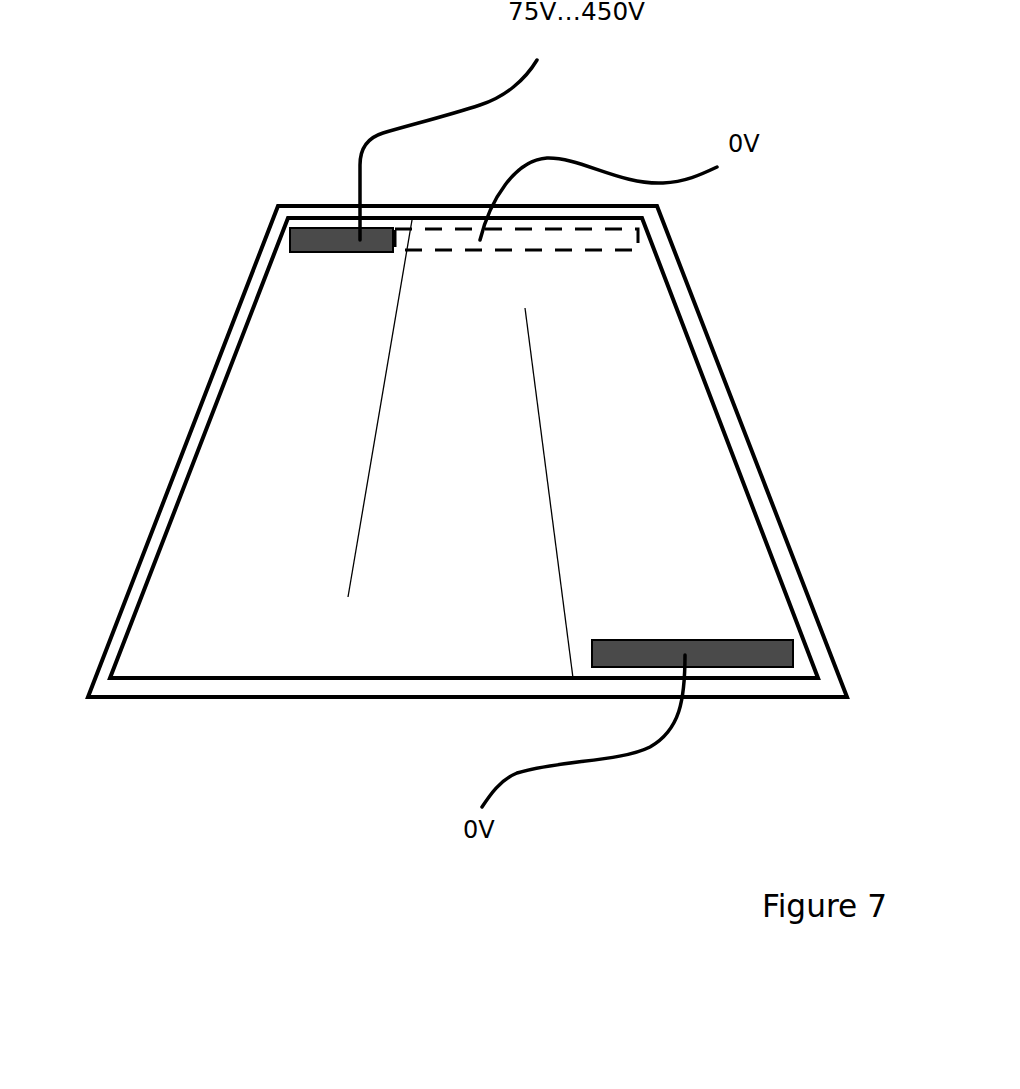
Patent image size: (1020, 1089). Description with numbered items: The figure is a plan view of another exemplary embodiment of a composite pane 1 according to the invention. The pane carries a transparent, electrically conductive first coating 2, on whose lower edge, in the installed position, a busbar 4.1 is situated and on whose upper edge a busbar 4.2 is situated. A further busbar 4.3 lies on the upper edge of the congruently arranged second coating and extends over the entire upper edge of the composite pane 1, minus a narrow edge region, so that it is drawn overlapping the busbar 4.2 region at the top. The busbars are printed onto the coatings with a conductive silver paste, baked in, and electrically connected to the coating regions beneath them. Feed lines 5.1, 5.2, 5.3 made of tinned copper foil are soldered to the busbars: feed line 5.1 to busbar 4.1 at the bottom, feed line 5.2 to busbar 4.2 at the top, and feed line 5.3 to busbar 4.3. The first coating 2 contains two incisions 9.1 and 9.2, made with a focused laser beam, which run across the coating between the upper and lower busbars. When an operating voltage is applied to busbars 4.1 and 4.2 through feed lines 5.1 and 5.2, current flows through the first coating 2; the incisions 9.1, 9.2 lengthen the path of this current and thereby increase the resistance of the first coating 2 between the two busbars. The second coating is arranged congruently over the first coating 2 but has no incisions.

The composite pane 1 is at (303, 132).
The first coating 2 is at (238, 568).
The busbar 4.1 is at (747, 653).
The busbar 4.2 is at (302, 235).
The busbar 4.3 is at (637, 240).
The feed line 5.1 is at (607, 760).
The feed line 5.2 is at (480, 105).
The feed line 5.3 is at (617, 173).
The incision 9.1 is at (363, 472).
The incision 9.2 is at (552, 483).